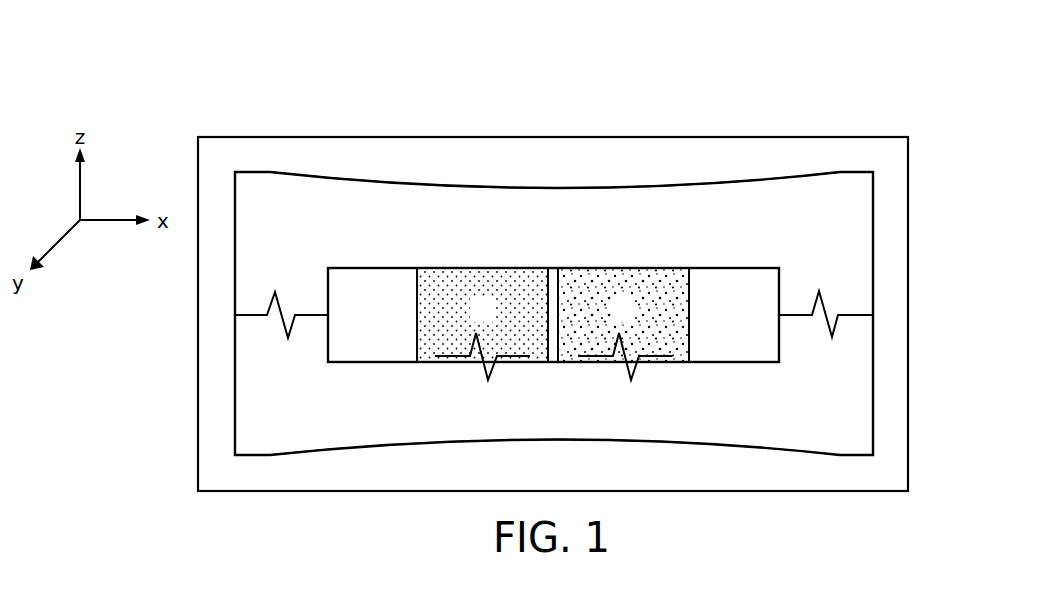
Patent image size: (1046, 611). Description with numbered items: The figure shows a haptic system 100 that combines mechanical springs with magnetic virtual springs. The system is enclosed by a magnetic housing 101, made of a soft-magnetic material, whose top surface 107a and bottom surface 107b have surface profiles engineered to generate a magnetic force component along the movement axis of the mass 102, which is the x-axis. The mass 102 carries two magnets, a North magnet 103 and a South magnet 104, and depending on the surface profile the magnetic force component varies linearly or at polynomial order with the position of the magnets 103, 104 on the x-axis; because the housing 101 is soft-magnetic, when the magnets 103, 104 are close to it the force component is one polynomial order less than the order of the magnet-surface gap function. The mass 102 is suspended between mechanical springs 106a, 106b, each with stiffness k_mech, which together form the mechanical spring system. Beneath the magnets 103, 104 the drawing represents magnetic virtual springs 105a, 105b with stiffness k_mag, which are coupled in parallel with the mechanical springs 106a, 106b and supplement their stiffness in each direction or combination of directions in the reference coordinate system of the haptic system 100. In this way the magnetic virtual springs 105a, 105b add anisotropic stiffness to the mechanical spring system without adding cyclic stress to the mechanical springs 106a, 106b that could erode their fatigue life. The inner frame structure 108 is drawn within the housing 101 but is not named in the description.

The haptic system 100 is at (298, 54).
The magnetic housing 101 is at (552, 137).
The mass 102 is at (351, 369).
The magnet (North) 103 is at (447, 278).
The magnet (South) 104 is at (655, 277).
The magnetic virtual spring 105a is at (489, 378).
The magnetic virtual spring 105b is at (632, 378).
The mechanical spring 106a is at (312, 313).
The mechanical spring 106b is at (796, 310).
The top surface 107a is at (402, 184).
The bottom surface 107b is at (404, 443).
The inner frame 108 is at (331, 222).